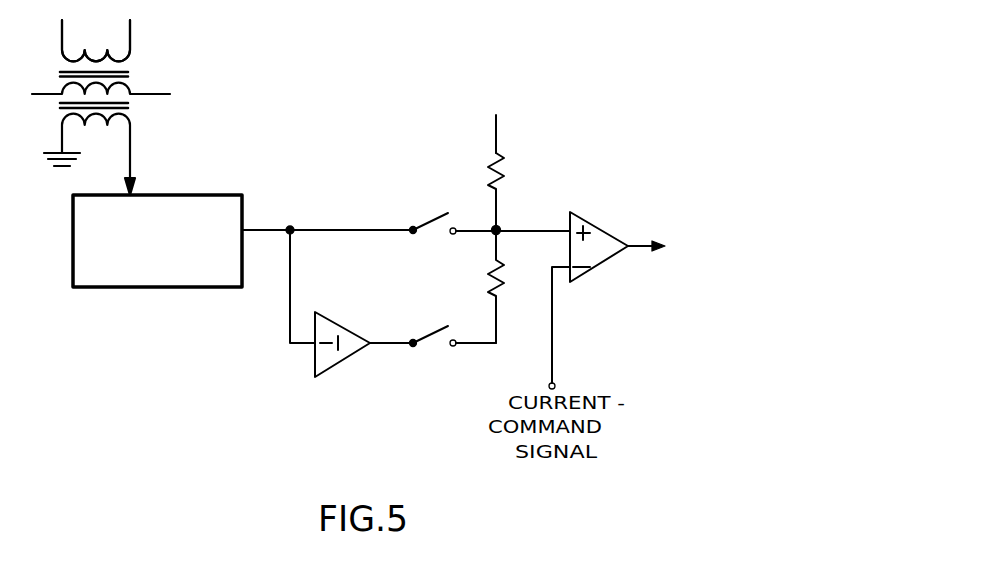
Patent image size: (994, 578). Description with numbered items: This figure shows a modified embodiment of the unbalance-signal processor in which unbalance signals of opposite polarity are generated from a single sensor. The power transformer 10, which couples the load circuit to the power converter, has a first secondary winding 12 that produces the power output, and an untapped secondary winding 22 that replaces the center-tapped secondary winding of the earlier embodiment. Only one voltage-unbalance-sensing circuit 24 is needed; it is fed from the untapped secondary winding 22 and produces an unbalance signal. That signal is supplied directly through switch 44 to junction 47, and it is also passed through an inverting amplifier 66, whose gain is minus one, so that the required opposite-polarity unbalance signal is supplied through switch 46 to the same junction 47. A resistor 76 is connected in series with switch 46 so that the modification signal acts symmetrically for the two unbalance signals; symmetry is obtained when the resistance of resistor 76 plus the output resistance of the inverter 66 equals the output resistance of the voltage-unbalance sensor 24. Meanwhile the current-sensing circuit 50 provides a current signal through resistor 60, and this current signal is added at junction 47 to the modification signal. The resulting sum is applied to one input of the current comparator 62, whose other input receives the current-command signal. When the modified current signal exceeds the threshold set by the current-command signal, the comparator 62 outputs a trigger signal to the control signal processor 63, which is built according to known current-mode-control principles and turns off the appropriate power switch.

The power transformer 10 is at (142, 76).
The first secondary winding 12 is at (130, 27).
The untapped secondary winding 22 is at (130, 124).
The voltage-unbalance-sensing circuit 24 is at (205, 195).
The switch 44 is at (428, 224).
The switch 46 is at (425, 328).
The junction 47 is at (500, 229).
The current-sensing circuit 50 is at (489, 109).
The resistor 60 is at (504, 171).
The current comparator 62 is at (598, 224).
The control signal processor 63 is at (746, 246).
The inverting amplifier 66 is at (342, 317).
The resistor 76 is at (488, 271).